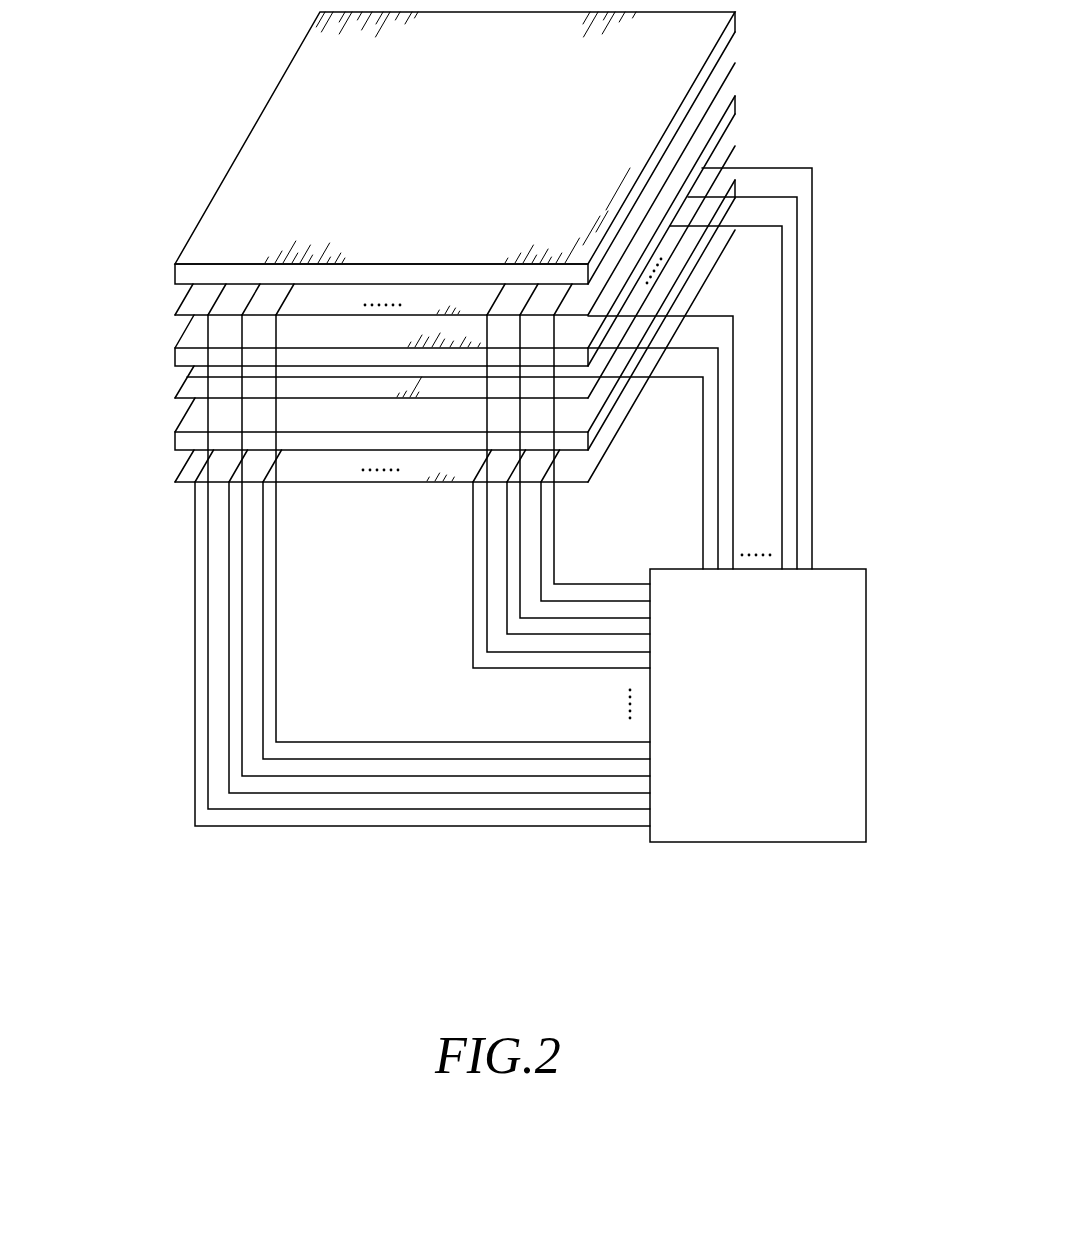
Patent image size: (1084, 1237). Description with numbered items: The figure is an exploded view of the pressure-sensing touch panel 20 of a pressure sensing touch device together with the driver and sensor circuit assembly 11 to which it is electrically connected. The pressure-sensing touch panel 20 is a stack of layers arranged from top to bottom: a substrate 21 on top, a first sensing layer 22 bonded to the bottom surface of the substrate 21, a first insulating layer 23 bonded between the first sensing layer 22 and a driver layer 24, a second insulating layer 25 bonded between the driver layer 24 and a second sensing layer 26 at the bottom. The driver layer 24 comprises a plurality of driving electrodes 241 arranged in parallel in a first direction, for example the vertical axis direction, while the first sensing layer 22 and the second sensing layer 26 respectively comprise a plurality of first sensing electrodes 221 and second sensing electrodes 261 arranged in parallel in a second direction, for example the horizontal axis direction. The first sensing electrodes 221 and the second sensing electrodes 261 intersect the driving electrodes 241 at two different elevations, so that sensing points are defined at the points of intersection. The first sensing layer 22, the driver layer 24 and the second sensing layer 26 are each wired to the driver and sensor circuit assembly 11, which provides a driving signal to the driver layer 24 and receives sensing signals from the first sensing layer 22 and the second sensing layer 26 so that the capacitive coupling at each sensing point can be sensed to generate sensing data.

The pressure-sensing touch panel 20 is at (232, 122).
The substrate 21 is at (197, 248).
The first sensing electrodes 221 is at (222, 293).
The first sensing layer 22 is at (192, 307).
The first insulating layer 23 is at (196, 338).
The driving electrodes 241 is at (200, 368).
The driver layer 24 is at (197, 392).
The second insulating layer 25 is at (203, 418).
The second sensing electrodes 261 is at (205, 463).
The second sensing layer 26 is at (190, 475).
The driver and sensor circuit assembly 11 is at (838, 569).